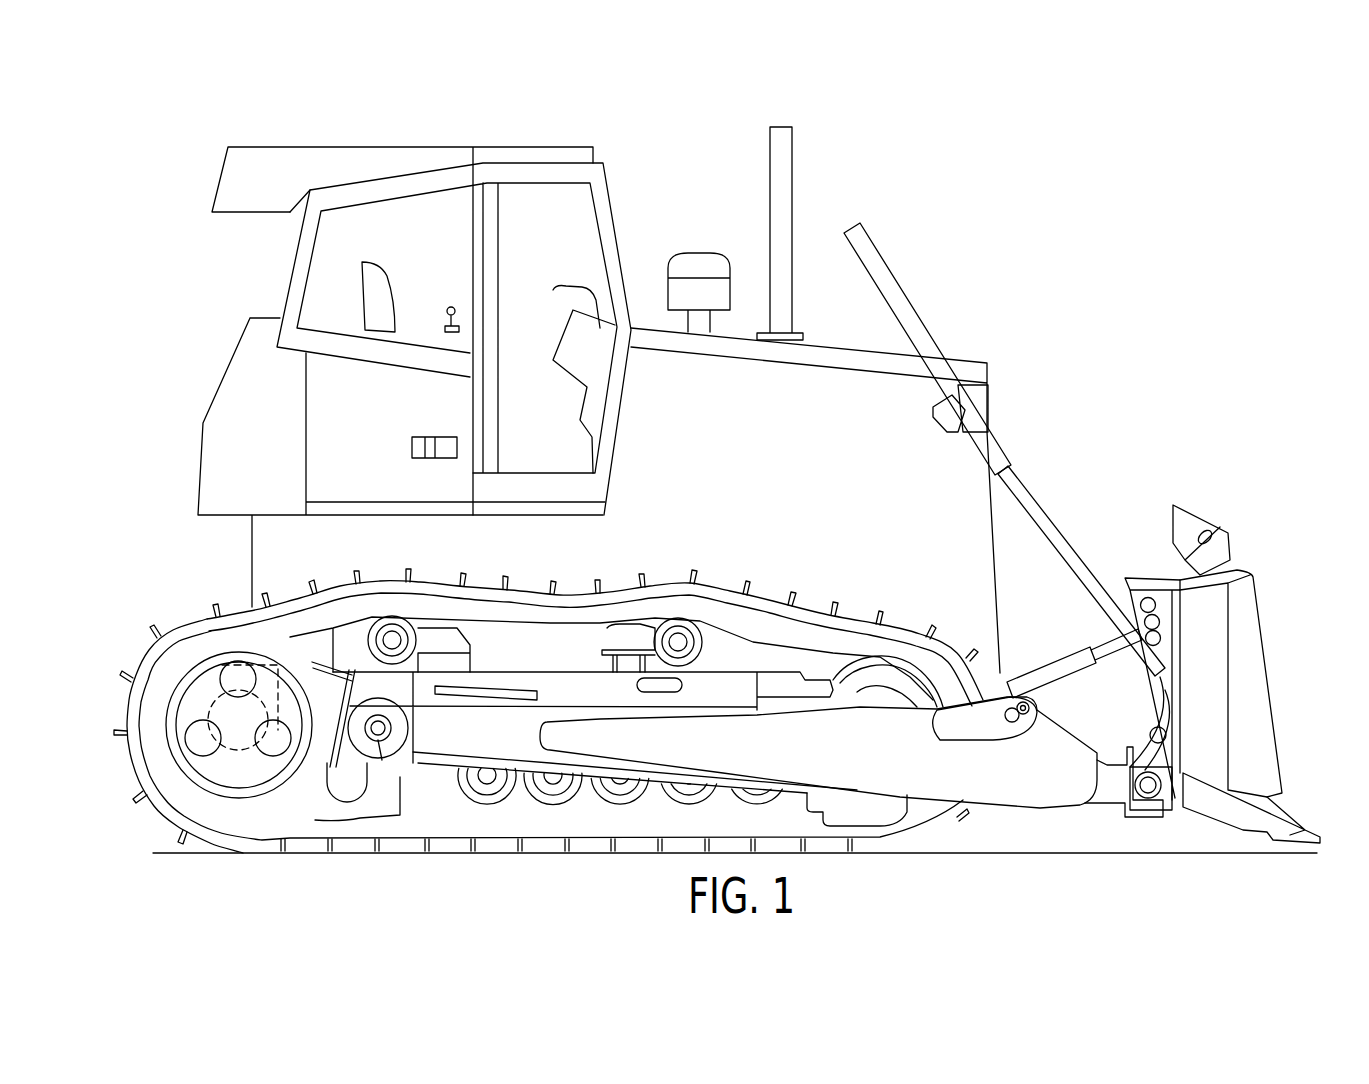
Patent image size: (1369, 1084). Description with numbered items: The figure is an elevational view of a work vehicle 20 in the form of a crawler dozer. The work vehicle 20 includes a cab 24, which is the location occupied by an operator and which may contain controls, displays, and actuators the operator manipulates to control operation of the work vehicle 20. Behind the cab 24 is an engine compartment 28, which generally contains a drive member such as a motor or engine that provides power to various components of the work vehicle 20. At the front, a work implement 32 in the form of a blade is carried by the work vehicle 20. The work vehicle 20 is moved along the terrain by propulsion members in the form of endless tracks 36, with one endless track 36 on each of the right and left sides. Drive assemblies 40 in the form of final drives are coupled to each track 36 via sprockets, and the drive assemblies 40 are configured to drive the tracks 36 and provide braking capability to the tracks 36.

The work vehicle 20 is at (1090, 121).
The cab 24 is at (647, 203).
The engine compartment 28 is at (853, 338).
The work implement 32 is at (1276, 667).
The endless tracks 36 is at (135, 651).
The drive assemblies 40 is at (248, 750).